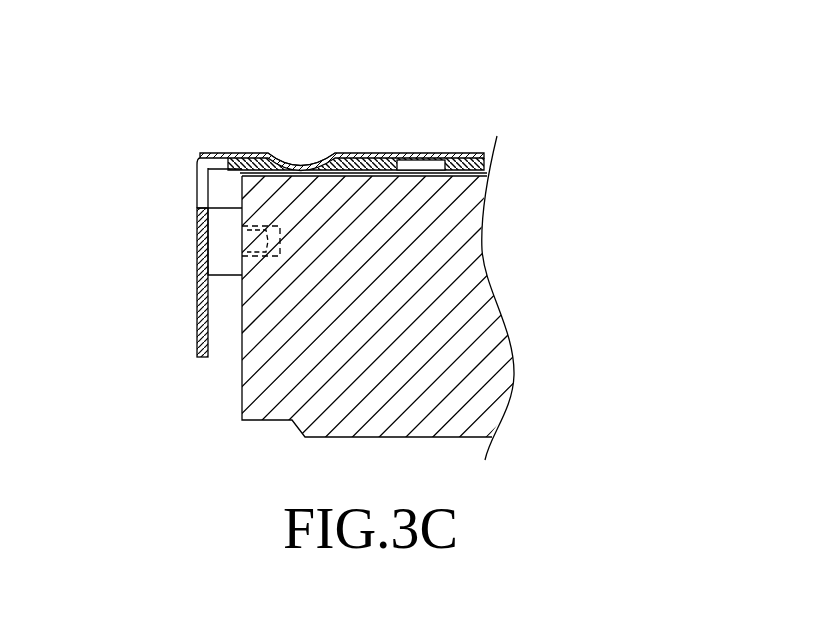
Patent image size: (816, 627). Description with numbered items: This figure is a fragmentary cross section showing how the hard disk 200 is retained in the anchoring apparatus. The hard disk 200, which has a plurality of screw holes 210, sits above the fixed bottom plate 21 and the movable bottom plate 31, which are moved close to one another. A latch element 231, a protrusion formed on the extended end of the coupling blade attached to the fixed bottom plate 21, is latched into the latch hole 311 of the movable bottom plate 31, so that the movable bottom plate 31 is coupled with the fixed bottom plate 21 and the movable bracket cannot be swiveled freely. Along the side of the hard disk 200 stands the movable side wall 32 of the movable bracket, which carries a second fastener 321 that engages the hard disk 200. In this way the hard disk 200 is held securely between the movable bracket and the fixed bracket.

The fixed bottom plate 21 is at (475, 152).
The movable bottom plate 31 is at (355, 153).
The latch hole 311 is at (232, 155).
The latch element 231 is at (300, 152).
The movable side wall 32 is at (200, 320).
The second fastener 321 is at (215, 232).
The hard disk 200 is at (480, 333).
The screw hole 210 is at (268, 256).